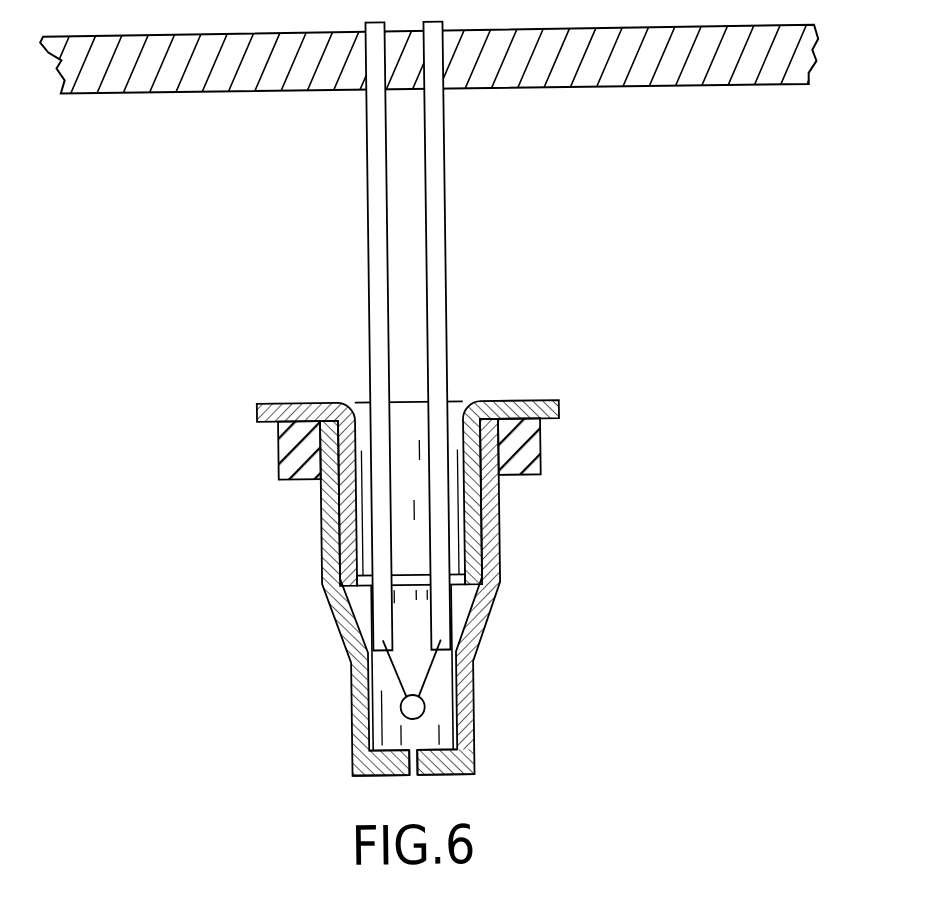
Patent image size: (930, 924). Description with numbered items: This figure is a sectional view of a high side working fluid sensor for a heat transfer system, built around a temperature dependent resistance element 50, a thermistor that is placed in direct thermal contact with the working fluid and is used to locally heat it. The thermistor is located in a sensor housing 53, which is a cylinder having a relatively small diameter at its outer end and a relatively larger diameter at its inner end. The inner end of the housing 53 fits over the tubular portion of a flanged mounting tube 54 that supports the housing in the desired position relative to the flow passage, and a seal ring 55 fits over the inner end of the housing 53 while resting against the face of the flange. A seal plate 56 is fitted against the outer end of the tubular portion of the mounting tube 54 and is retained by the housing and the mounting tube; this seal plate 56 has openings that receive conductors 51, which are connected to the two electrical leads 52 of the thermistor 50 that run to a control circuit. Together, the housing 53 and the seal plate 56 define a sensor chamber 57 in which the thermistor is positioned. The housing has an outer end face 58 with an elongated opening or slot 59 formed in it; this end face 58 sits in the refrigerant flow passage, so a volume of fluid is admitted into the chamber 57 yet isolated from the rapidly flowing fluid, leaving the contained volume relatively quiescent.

The temperature dependent resistance element 50 is at (415, 712).
The conductors 51 is at (377, 173).
The electrical leads 52 is at (350, 671).
The sensor housing 53 is at (488, 613).
The flanged mounting tube 54 is at (558, 404).
The seal ring 55 is at (276, 449).
The seal plate 56 is at (407, 570).
The sensor chamber 57 is at (379, 720).
The outer end face 58 is at (447, 779).
The elongated opening or slot 59 is at (405, 775).